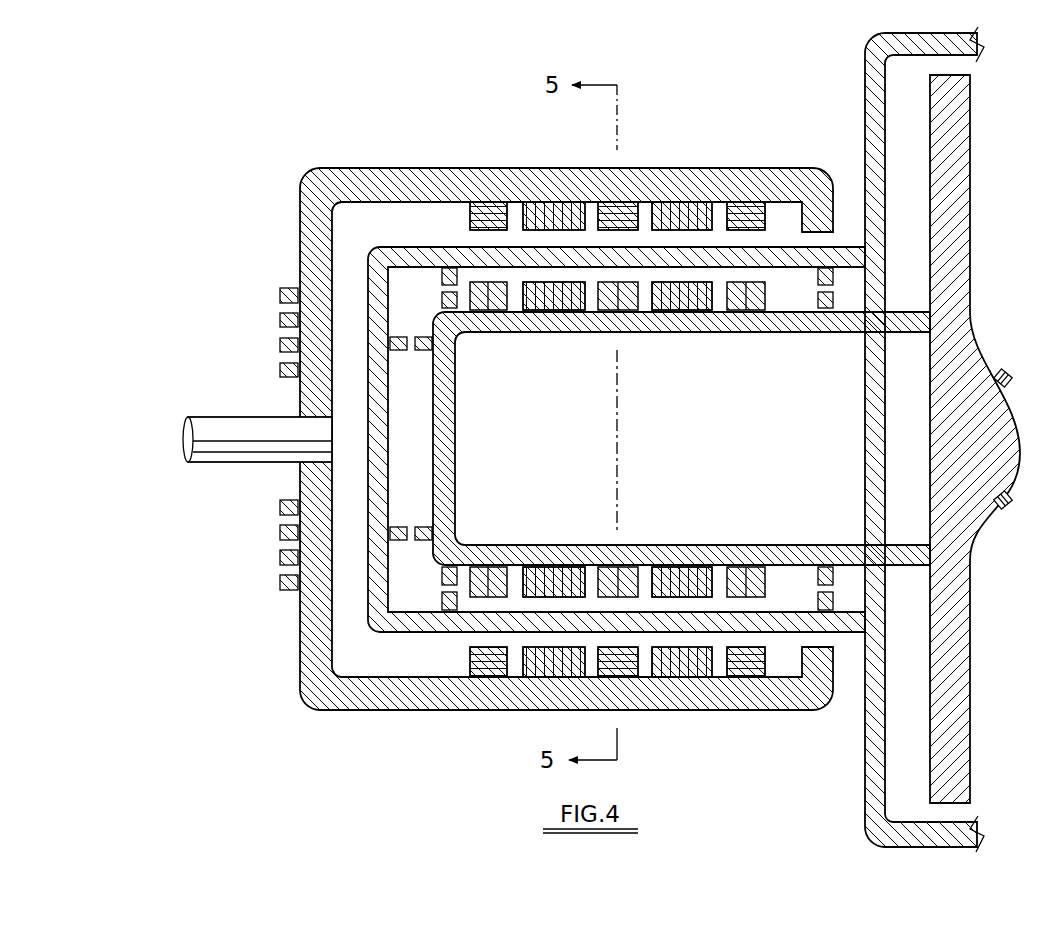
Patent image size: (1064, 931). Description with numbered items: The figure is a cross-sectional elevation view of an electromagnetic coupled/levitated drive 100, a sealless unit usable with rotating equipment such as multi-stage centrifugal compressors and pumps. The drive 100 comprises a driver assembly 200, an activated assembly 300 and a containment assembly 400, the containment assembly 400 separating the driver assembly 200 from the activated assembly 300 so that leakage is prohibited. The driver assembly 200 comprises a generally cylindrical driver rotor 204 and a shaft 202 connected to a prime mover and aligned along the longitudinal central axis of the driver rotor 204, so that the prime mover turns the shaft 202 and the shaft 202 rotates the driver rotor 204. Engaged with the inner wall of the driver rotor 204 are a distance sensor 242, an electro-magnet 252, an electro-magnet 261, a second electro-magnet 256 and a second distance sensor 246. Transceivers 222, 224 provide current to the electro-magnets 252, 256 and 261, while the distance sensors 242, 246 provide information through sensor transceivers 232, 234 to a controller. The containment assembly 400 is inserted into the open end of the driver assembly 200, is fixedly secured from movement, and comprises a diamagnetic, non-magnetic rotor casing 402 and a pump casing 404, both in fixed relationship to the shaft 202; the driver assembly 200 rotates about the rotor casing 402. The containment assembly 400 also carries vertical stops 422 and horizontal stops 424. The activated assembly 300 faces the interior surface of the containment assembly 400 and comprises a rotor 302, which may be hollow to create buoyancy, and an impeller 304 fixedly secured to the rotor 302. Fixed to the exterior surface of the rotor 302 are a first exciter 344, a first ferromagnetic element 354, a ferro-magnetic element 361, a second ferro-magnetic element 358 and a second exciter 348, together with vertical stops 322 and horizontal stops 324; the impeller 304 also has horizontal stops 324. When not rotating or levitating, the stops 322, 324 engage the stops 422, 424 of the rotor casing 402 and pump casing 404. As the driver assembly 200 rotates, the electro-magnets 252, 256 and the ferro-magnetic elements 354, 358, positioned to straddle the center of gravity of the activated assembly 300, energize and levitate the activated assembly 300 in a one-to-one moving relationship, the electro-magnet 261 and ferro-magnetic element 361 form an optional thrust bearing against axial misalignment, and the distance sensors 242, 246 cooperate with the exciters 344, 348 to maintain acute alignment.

The electromagnetic coupled/levitated drive 100 is at (700, 805).
The driver assembly 200 is at (343, 132).
The shaft 202 is at (212, 445).
The driver rotor 204 is at (312, 642).
The transceiver 222 is at (288, 345).
The transceiver 224 is at (288, 370).
The sensor transceiver 232 is at (288, 290).
The sensor transceiver 234 is at (288, 320).
The distance sensor 242 is at (483, 208).
The second distance sensor 246 is at (748, 207).
The electro-magnet 252 is at (520, 205).
The second electro-magnet 256 is at (685, 205).
The electro-magnet 261 is at (633, 208).
The activated assembly 300 is at (900, 302).
The rotor 302 is at (760, 543).
The impeller 304 is at (955, 228).
The vertical stop 322 is at (824, 310).
The horizontal stop 324 is at (397, 352).
The first exciter 344 is at (498, 310).
The second exciter 348 is at (755, 310).
The first ferromagnetic element 354 is at (550, 307).
The second ferro-magnetic element 358 is at (683, 302).
The ferro-magnetic element 361 is at (643, 307).
The containment assembly 400 is at (377, 635).
The rotor casing 402 is at (777, 618).
The pump casing 404 is at (878, 742).
The vertical stop 422 is at (835, 596).
The horizontal stop 424 is at (423, 352).